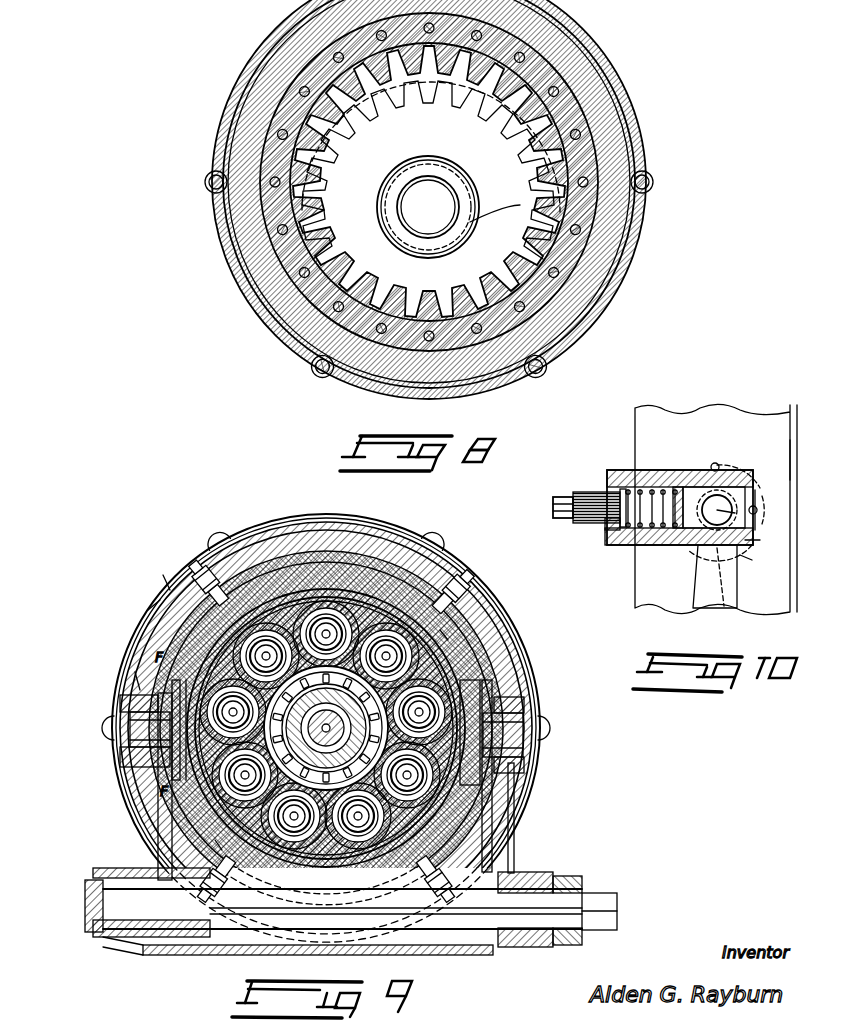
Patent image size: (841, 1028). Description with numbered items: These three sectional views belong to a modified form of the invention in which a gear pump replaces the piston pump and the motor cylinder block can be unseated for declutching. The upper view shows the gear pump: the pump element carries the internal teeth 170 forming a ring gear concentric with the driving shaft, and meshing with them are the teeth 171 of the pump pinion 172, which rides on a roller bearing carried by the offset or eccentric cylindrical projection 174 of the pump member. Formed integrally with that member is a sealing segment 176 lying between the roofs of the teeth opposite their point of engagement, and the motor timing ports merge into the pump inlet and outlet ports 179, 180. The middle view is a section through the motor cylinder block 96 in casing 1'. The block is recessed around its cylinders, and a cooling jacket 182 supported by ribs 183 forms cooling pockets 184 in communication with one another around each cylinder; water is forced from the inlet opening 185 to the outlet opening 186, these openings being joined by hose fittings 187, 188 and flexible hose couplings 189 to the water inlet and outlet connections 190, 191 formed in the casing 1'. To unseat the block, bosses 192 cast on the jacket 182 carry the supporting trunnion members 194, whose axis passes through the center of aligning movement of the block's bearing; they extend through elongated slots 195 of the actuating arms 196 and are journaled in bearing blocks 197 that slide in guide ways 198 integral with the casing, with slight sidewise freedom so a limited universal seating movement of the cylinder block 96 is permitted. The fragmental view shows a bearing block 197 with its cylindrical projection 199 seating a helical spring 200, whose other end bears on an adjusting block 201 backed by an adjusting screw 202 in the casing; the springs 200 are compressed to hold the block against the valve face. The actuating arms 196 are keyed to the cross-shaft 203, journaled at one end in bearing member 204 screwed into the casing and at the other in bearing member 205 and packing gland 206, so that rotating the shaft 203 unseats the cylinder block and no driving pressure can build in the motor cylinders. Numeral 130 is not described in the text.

In FIG. 9, the cylinder block 96 is at (455, 682).
In FIG. 9, the internal ring gear 130 is at (420, 842).
In FIG. 9, the casing 1' is at (136, 612).
In FIG. 8, the internal teeth 170 is at (292, 172).
In FIG. 8, the teeth 171 is at (302, 253).
In FIG. 8, the pump pinion 172 is at (372, 328).
In FIG. 8, the eccentric cylindrical projection 174 is at (415, 222).
In FIG. 8, the sealing segment 176 is at (506, 44).
In FIG. 8, the pump inlet port 179 is at (343, 127).
In FIG. 8, the pump outlet port 180 is at (520, 205).
In FIG. 9, the cooling jacket 182 is at (515, 822).
In FIG. 9, the ribs 183 is at (370, 860).
In FIG. 9, the cooling pockets 184 is at (442, 664).
In FIG. 9, the inlet opening 185 is at (215, 840).
In FIG. 9, the outlet opening 186 is at (442, 636).
In FIG. 9, the hose fitting 187 is at (448, 606).
In FIG. 9, the hose fitting 188 is at (212, 610).
In FIG. 9, the flexible hose couplings 189 is at (372, 562).
In FIG. 9, the water inlet connection 190 is at (450, 950).
In FIG. 9, the water outlet connection 191 is at (163, 580).
In FIG. 9, the bosses 192 is at (522, 668).
In FIG. 10, the supporting trunnion members 194 is at (748, 540).
In FIG. 9, the supporting trunnion members 194 is at (130, 752).
In FIG. 10, the elongated slots 195 is at (716, 610).
In FIG. 9, the elongated slots 195 is at (135, 672).
In FIG. 10, the actuating arms 196 is at (756, 498).
In FIG. 9, the actuating arms 196 is at (155, 832).
In FIG. 10, the bearing blocks 197 is at (745, 558).
In FIG. 9, the bearing blocks 197 is at (125, 702).
In FIG. 10, the guide ways 198 is at (772, 480).
In FIG. 9, the guide ways 198 is at (160, 800).
In FIG. 10, the cylindrical projections 199 is at (682, 470).
In FIG. 10, the helical springs 200 is at (645, 472).
In FIG. 10, the adjusting blocks 201 is at (612, 480).
In FIG. 10, the adjusting screws 202 is at (604, 490).
In FIG. 9, the cross-shaft 203 is at (205, 950).
In FIG. 9, the bearing member 204 is at (82, 922).
In FIG. 9, the bearing member 205 is at (506, 948).
In FIG. 9, the packing gland 206 is at (568, 876).